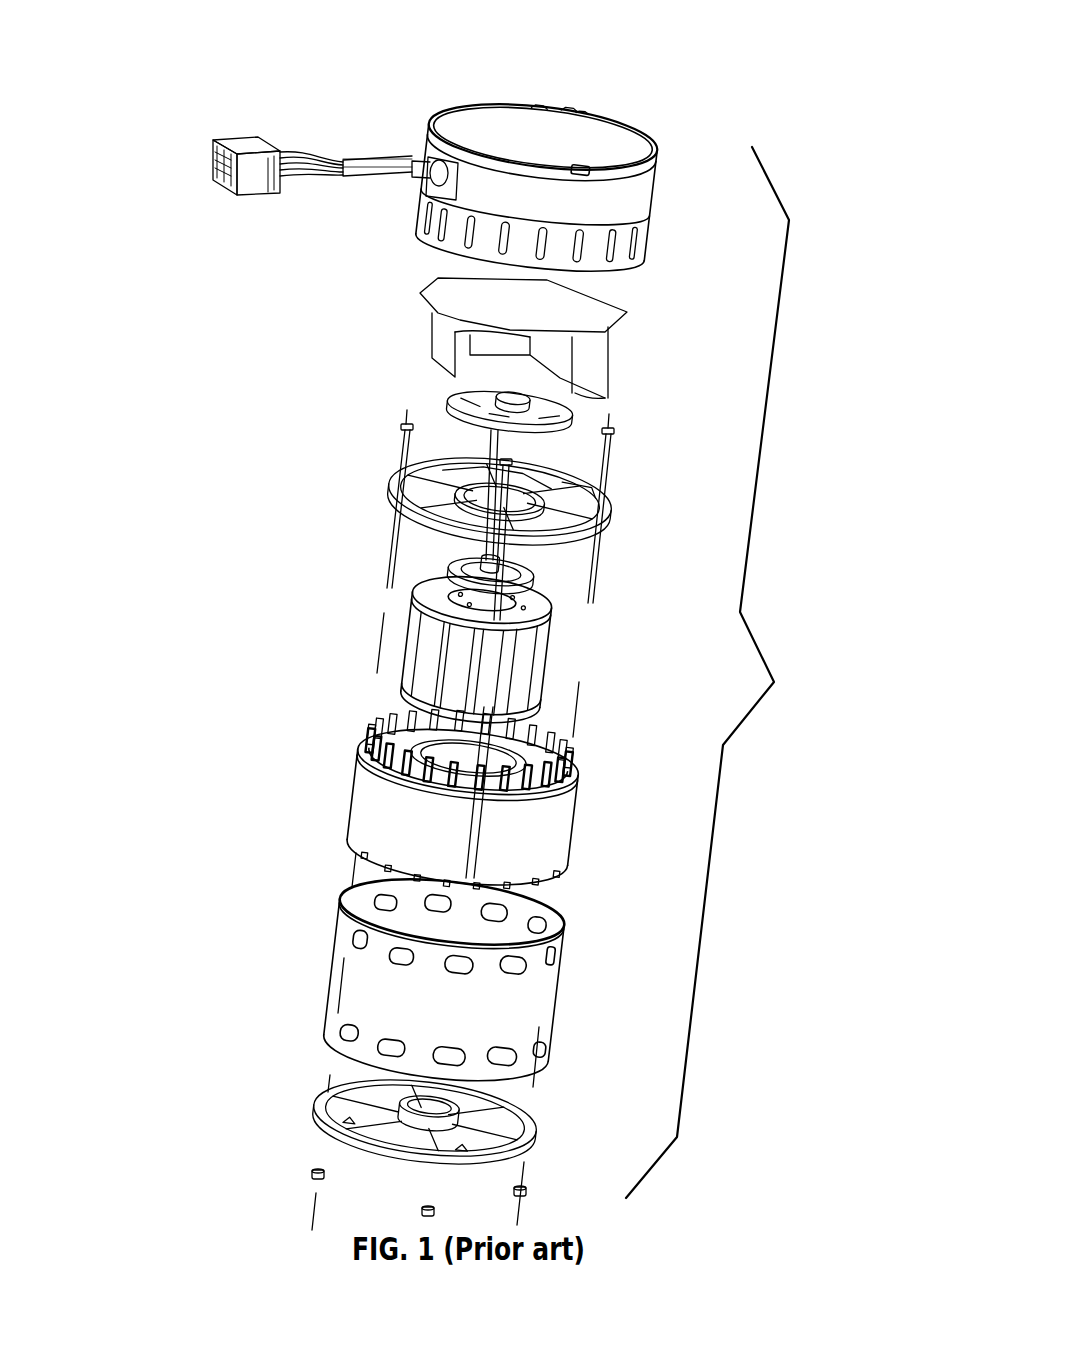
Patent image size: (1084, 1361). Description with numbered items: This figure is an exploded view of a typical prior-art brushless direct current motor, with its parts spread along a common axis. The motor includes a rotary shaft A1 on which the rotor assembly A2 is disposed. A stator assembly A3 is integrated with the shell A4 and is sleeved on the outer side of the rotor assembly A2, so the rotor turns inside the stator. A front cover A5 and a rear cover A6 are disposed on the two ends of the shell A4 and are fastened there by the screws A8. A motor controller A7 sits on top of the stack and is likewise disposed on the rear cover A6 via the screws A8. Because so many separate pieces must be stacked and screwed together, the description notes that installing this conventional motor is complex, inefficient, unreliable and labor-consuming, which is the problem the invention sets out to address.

The rotary shaft A1 is at (473, 743).
The rotor assembly A2 is at (471, 651).
The stator assembly A3 is at (519, 823).
The shell A4 is at (487, 1004).
The front cover A5 is at (535, 1117).
The rear cover A6 is at (394, 478).
The motor controller A7 is at (492, 92).
The screws A8 is at (605, 478).